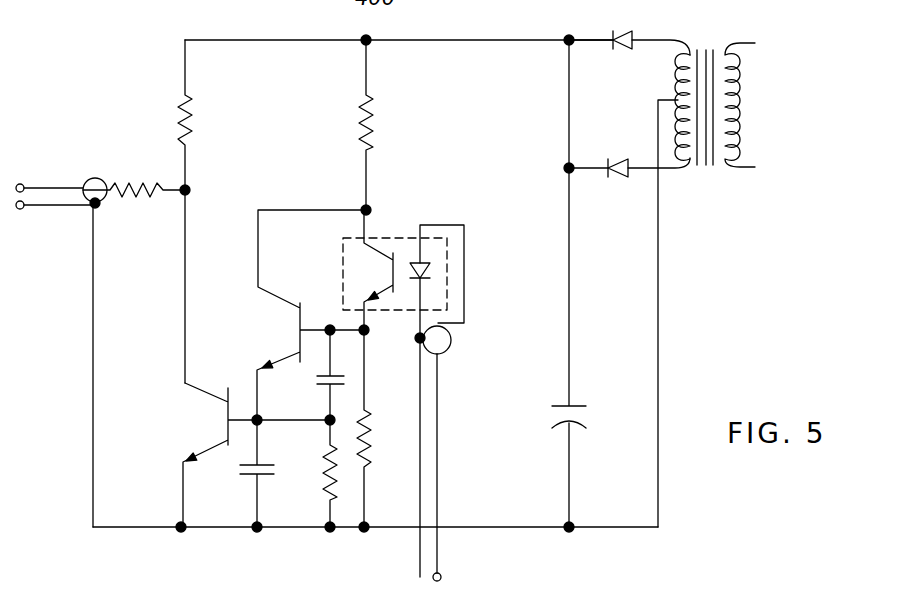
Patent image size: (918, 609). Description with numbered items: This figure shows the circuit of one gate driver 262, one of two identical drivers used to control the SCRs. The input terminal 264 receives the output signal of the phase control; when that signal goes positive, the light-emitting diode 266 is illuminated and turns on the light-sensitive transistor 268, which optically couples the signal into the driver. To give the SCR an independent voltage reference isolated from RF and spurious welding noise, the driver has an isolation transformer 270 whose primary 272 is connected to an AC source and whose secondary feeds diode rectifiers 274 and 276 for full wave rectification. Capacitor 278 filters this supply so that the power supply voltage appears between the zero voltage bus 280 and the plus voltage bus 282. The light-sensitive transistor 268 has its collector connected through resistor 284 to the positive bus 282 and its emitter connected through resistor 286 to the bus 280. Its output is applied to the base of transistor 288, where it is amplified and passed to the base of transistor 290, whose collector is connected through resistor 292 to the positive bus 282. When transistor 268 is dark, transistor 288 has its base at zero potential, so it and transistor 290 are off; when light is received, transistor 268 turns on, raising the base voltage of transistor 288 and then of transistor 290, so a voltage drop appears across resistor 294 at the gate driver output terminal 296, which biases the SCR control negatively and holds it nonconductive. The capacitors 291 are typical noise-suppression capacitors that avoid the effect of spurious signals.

The gate driver 262 is at (483, 132).
The input terminal 264 is at (443, 574).
The light-emitting diode 266 is at (432, 267).
The light-sensitive transistor 268 is at (383, 277).
The isolation transformer 270 is at (695, 180).
The primary 272 is at (735, 115).
The diode rectifier 274 is at (632, 40).
The diode rectifier 276 is at (620, 178).
The capacitor 278 is at (585, 415).
The zero voltage bus 280 is at (283, 527).
The plus voltage bus 282 is at (265, 40).
The resistor 284 is at (358, 117).
The resistor 286 is at (365, 442).
The transistor 288 is at (297, 322).
The transistor 290 is at (218, 417).
The capacitors 291 is at (318, 380).
The resistor 292 is at (192, 106).
The resistor 294 is at (128, 198).
The gate driver output terminal 296 is at (20, 183).